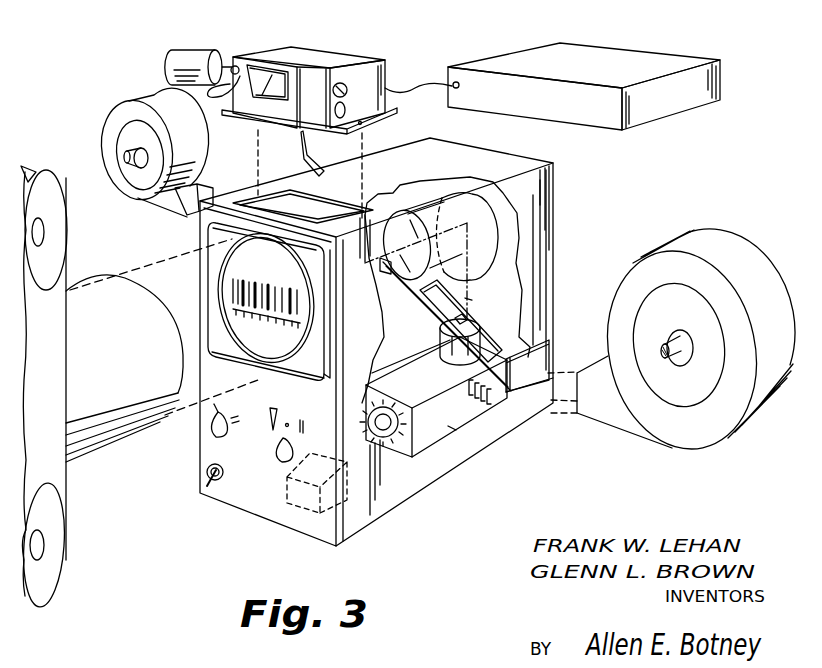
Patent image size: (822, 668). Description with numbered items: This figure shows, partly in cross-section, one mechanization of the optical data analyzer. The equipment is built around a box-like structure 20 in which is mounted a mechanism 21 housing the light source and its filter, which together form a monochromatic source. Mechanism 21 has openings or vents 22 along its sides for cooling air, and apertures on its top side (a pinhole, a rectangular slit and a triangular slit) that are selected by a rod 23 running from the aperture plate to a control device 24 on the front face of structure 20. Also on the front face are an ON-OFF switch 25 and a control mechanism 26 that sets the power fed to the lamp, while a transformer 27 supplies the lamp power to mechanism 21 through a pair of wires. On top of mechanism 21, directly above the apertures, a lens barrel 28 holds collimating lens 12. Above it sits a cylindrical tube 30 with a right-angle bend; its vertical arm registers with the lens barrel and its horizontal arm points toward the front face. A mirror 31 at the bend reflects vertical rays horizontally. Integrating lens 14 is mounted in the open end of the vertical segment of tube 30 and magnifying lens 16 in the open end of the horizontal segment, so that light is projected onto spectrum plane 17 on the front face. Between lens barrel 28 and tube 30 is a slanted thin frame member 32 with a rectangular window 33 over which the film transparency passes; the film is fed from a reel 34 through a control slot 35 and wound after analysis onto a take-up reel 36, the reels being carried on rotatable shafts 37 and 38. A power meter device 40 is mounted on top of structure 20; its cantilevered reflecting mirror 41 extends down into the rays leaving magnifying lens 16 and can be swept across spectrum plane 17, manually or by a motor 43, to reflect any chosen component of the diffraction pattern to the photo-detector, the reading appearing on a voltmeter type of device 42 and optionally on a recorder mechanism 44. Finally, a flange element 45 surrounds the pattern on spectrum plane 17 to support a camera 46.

The collimating lens 12 is at (440, 328).
The integrating lens 14 is at (517, 263).
The magnifying lens 16 is at (404, 192).
The spectrum plane 17 is at (270, 348).
The box-like structure 20 is at (557, 204).
The mechanism 21 is at (415, 456).
The openings or vents 22 is at (486, 408).
The rod 23 is at (452, 428).
The control device 24 is at (276, 456).
The ON-OFF switch 25 is at (208, 468).
The control mechanism 26 is at (209, 428).
The transformer 27 is at (296, 512).
The lens barrel 28 is at (439, 349).
The cylindrical tube 30 is at (438, 193).
The mirror 31 is at (471, 193).
The thin frame member 32 is at (473, 299).
The rectangular window 33 is at (426, 289).
The reel 34 is at (718, 234).
The control slot 35 is at (561, 362).
The take-up reel 36 is at (113, 118).
The rotatable shaft 37 is at (680, 364).
The rotatable shaft 38 is at (135, 166).
The power meter device 40 is at (343, 57).
The cantilevered reflecting mirror 41 is at (306, 163).
The voltmeter type of device 42 is at (273, 72).
The motor 43 is at (201, 50).
The recorder mechanism 44 is at (505, 58).
The flange element 45 is at (221, 332).
The camera 46 is at (79, 464).